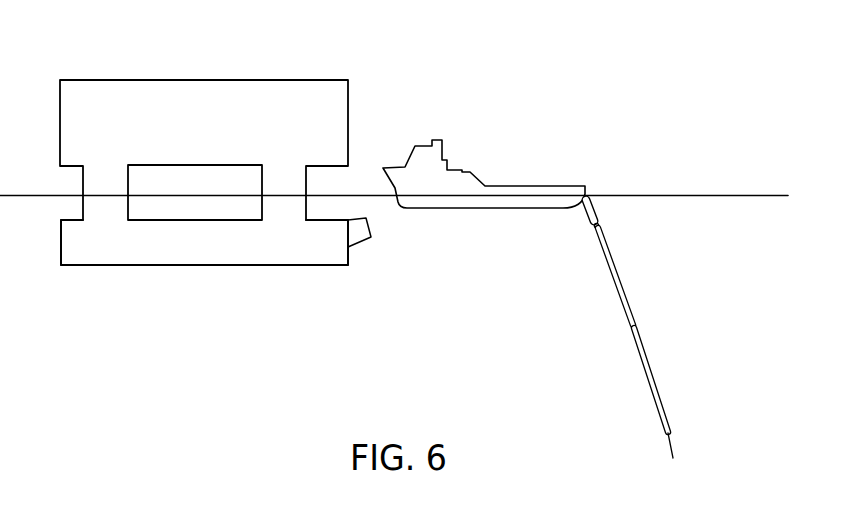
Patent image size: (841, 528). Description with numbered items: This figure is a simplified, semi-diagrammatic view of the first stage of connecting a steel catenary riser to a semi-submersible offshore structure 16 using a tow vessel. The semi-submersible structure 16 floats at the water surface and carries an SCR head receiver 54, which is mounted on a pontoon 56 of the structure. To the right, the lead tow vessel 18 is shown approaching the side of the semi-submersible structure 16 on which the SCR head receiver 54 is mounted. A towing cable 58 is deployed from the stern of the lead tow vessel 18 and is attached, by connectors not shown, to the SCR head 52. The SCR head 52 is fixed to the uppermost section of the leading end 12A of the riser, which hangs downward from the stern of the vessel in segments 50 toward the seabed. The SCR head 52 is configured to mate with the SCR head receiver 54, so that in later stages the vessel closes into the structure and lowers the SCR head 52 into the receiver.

The semi-submersible structure 16 is at (176, 80).
The pontoon 56 is at (196, 255).
The SCR head receiver 54 is at (369, 239).
The lead tow vessel 18 is at (438, 140).
The towing cable 58 is at (587, 194).
The SCR head 52 is at (597, 221).
The riser segments 50 is at (627, 288).
The leading end of the SCR 12A is at (671, 446).